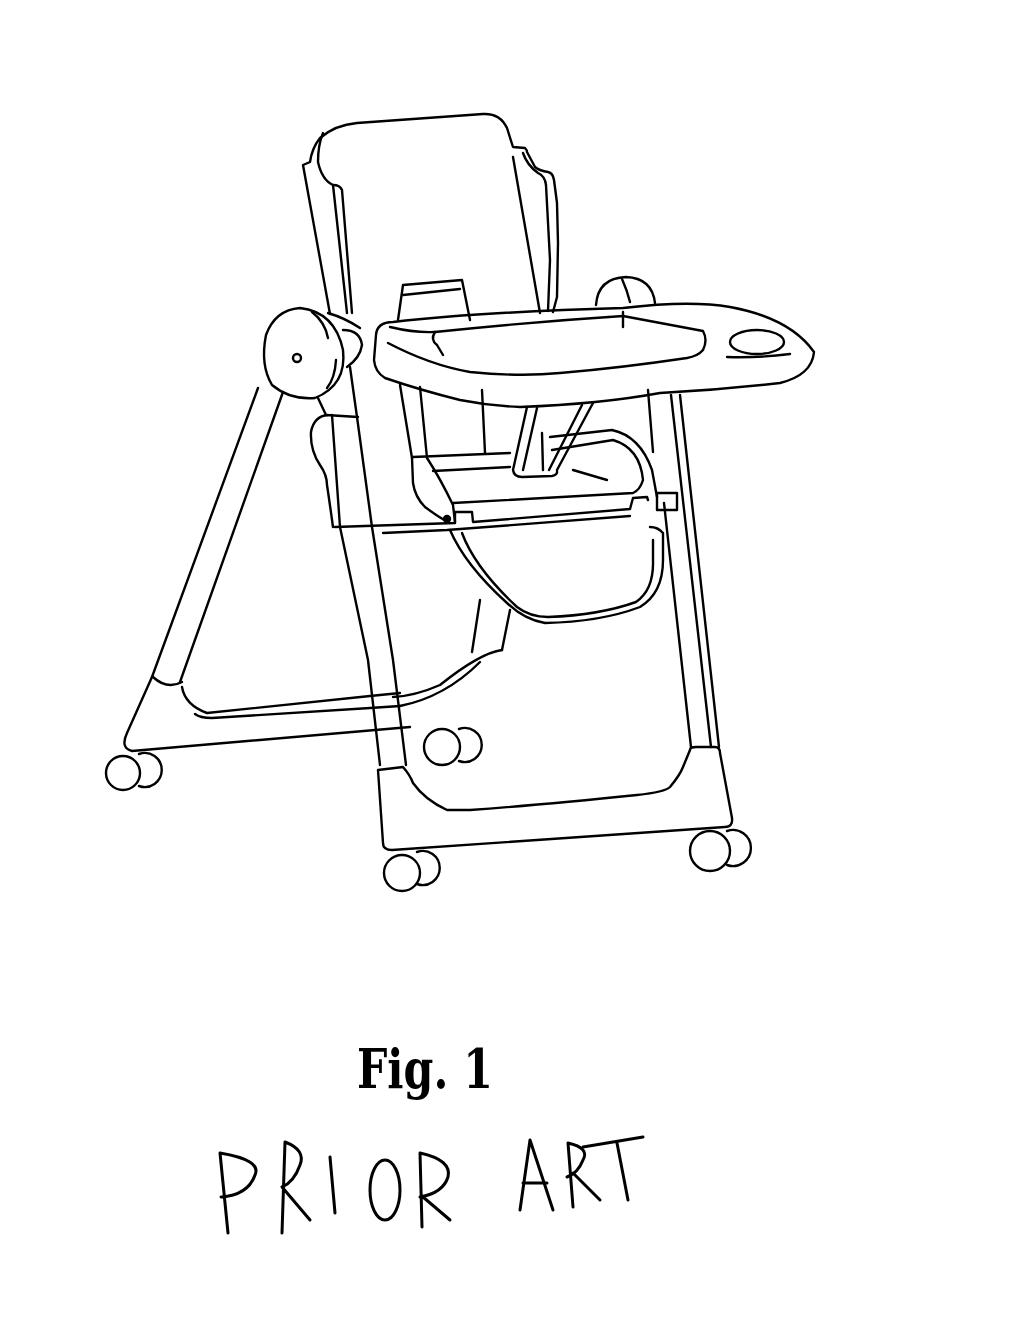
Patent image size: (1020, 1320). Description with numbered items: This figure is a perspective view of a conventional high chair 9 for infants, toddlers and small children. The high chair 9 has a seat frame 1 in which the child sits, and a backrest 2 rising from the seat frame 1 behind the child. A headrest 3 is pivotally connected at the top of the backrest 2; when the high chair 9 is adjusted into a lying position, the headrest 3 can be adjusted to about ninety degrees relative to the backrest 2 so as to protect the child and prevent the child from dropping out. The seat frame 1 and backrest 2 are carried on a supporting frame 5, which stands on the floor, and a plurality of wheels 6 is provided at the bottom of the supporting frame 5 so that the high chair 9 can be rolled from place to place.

The seat frame 1 is at (533, 490).
The backrest 2 is at (336, 495).
The headrest 3 is at (483, 114).
The supporting frame 5 is at (198, 590).
The wheels 6 is at (125, 782).
The high chair 9 is at (238, 193).